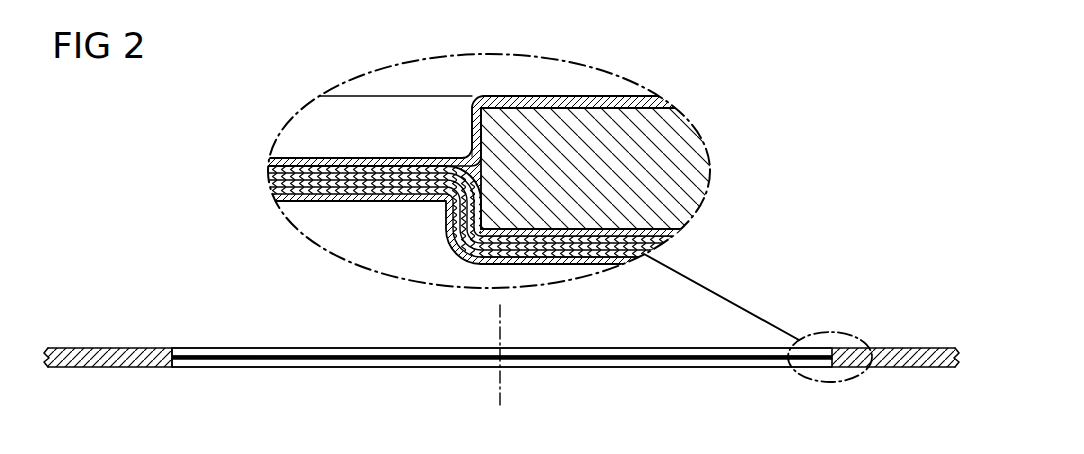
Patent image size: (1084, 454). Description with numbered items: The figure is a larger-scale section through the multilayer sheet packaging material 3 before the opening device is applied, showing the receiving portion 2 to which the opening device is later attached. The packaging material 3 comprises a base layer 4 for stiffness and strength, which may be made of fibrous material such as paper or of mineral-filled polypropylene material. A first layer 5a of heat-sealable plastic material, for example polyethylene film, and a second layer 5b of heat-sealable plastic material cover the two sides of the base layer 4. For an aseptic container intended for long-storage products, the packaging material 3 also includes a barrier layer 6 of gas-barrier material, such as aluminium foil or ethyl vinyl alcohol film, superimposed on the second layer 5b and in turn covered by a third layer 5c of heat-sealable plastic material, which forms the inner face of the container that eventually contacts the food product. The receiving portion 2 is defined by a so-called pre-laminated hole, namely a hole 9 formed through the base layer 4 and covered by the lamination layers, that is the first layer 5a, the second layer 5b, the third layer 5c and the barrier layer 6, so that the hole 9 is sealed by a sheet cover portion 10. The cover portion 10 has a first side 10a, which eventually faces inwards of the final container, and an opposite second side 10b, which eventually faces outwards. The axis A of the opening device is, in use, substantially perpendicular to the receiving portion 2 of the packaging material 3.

The receiving portion 2 is at (284, 150).
The sheet packaging material 3 is at (704, 118).
The base layer 4 is at (698, 152).
The first layer of heat-sealable plastic material 5a is at (530, 99).
The second layer of heat-sealable plastic material 5b is at (662, 228).
The third layer of heat-sealable plastic material 5c is at (549, 266).
The barrier layer 6 is at (640, 250).
The hole 9 is at (462, 127).
The sheet cover portion 10 is at (296, 210).
The first side 10a is at (350, 205).
The second side 10b is at (398, 157).
The axis A is at (504, 400).